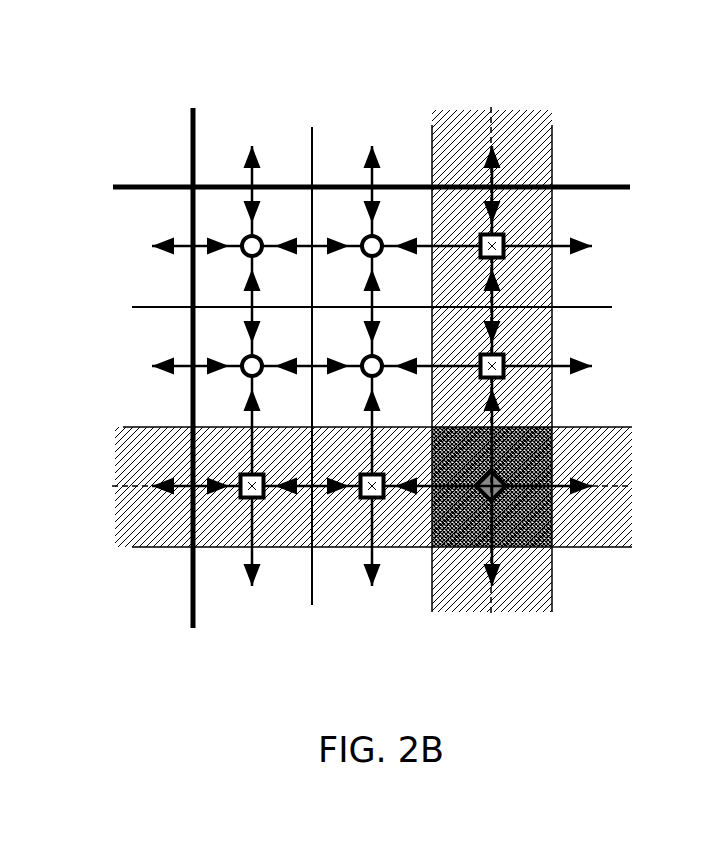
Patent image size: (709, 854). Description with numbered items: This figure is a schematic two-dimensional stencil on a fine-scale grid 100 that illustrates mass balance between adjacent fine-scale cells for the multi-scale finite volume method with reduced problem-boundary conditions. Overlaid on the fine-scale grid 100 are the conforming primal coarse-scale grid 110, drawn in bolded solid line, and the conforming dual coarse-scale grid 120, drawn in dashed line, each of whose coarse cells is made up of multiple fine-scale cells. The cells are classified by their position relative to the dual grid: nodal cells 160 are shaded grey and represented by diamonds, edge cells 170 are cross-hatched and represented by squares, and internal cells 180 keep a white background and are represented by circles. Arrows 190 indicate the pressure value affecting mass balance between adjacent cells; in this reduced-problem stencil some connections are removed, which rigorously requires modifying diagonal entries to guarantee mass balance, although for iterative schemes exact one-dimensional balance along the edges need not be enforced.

The fine-scale grid 100 is at (313, 135).
The primal coarse-scale grid 110 is at (188, 410).
The dual coarse-scale grid 120 is at (490, 619).
The nodal cells 160 is at (518, 509).
The edge cells 170 is at (518, 276).
The internal cells 180 is at (213, 218).
The arrows 190 is at (247, 555).